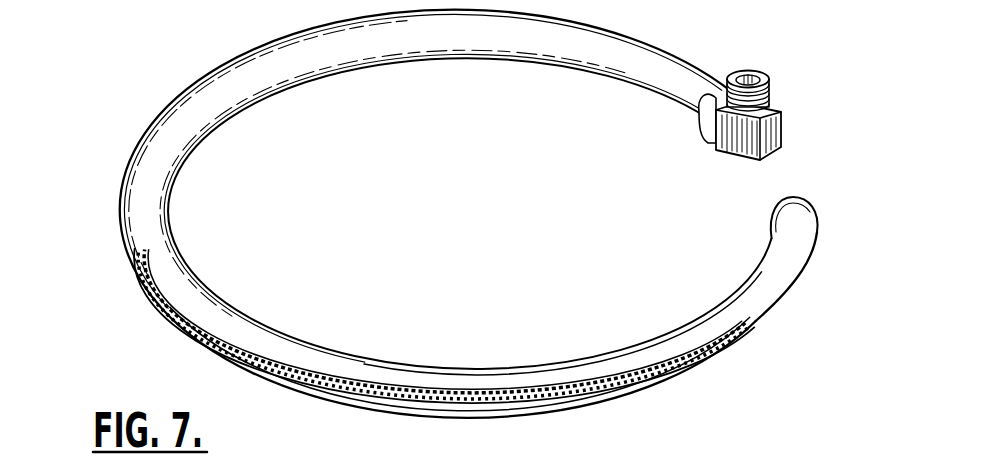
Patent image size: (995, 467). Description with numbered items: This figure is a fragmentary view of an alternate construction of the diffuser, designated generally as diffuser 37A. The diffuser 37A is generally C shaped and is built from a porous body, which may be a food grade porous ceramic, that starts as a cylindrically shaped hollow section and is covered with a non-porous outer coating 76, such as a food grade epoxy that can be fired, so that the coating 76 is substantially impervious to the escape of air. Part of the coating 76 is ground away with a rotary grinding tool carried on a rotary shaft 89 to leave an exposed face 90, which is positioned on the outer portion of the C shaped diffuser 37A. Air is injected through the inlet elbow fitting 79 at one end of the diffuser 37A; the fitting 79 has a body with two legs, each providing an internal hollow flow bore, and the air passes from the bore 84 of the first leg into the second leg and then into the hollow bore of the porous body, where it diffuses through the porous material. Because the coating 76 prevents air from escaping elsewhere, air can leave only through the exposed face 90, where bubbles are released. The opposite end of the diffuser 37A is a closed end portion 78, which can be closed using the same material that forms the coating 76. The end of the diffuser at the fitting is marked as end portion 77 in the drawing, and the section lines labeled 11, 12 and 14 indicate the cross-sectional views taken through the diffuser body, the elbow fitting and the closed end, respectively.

The diffuser 37A is at (486, 227).
The outer coating 76 is at (487, 33).
The tube end ferrule 77 is at (705, 109).
The closed end portion 78 is at (815, 218).
The inlet elbow fitting 79 is at (726, 146).
The bore 84 is at (757, 72).
The exposed face 90 is at (380, 398).
The rotary shaft 89 is at (687, 460).
The section line 11- 11 is at (48, 168).
The section line 12- 12 is at (660, 63).
The section line 14- 14 is at (793, 198).